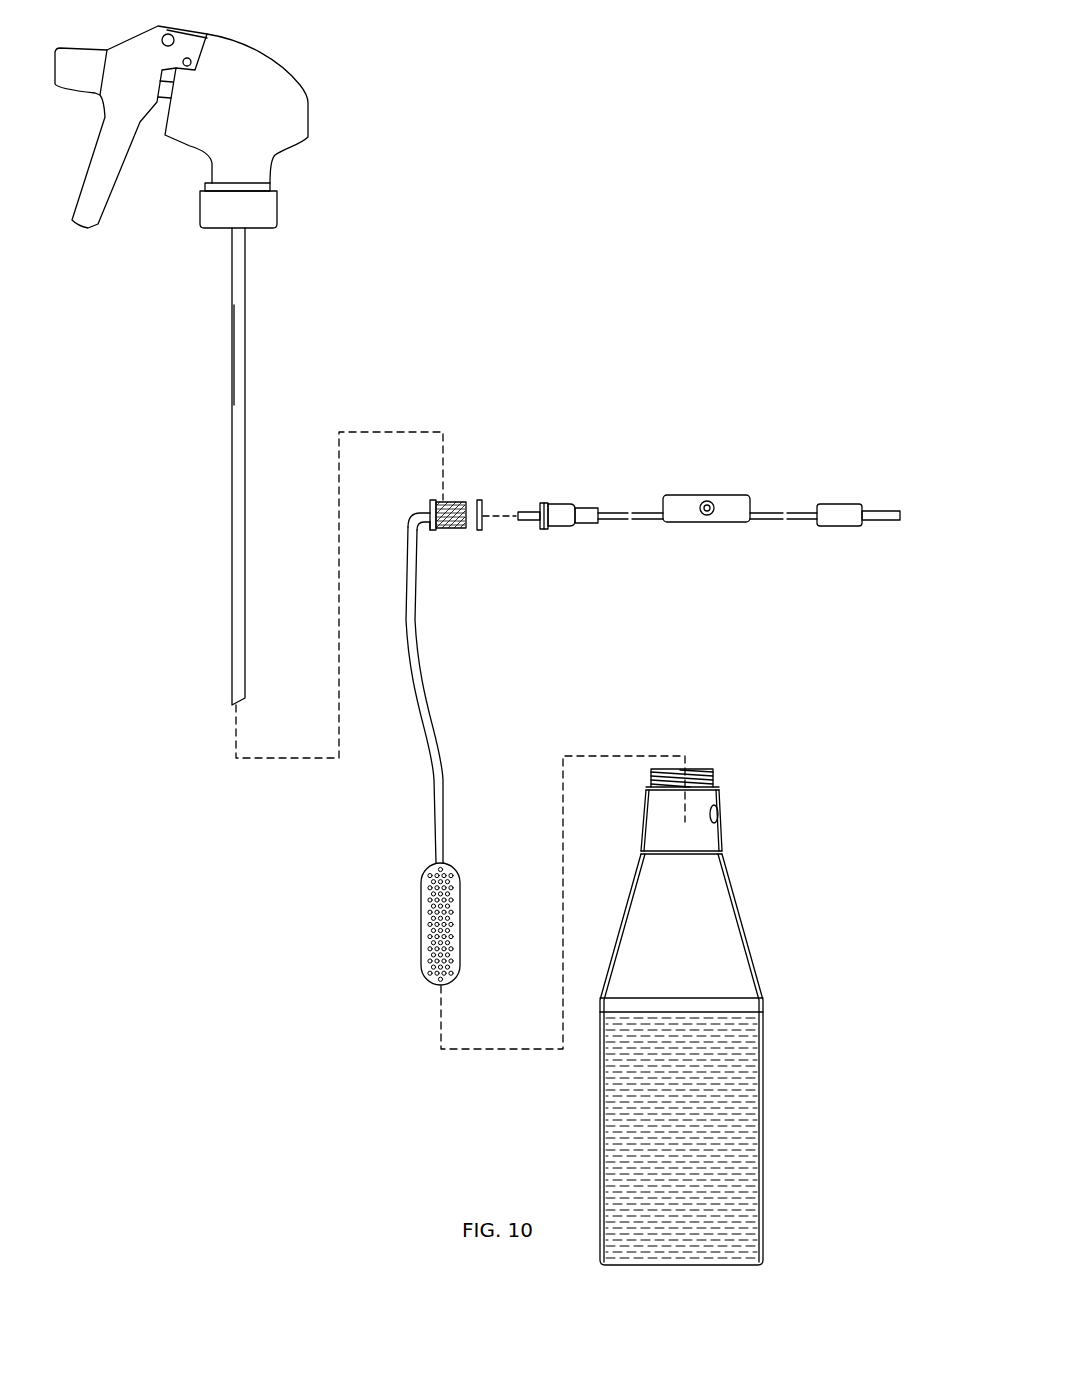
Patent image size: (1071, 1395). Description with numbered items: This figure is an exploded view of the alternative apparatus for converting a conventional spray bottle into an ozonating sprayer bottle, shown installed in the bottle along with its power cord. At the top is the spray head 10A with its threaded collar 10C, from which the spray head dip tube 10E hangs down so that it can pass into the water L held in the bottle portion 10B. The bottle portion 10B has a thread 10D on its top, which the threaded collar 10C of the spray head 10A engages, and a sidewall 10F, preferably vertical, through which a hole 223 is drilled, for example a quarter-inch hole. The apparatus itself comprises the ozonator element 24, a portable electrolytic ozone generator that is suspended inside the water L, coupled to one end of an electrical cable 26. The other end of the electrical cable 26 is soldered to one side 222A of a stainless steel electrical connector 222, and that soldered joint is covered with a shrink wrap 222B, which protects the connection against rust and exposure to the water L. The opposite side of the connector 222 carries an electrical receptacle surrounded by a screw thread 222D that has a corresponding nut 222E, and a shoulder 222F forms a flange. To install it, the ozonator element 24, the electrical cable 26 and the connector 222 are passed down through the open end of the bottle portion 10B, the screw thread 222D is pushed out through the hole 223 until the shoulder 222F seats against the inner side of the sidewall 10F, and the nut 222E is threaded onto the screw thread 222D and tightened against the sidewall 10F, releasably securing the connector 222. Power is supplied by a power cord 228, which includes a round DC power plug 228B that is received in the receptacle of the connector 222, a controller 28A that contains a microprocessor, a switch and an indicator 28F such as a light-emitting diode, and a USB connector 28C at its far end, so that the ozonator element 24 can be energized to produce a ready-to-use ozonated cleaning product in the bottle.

The spray head 10A is at (245, 57).
The threaded collar 10C is at (270, 210).
The spray head dip tube 10E is at (238, 496).
The thread 10D is at (718, 770).
The sidewall 10F is at (719, 832).
The bottle portion 10B is at (718, 1059).
The hole 223 is at (722, 815).
The water L is at (703, 1120).
The electrical connector 222 is at (469, 483).
The side of the electrical connector 222A is at (426, 496).
The shrink wrap 222B is at (407, 517).
The screw thread 222D is at (453, 513).
The nut 222E is at (480, 510).
The shoulder 222F is at (436, 528).
The power cord 228 is at (714, 537).
The round DC power plug 228B is at (559, 472).
The controller 28A is at (732, 506).
The indicator 28F is at (700, 511).
The USB connector 28C is at (864, 483).
The electrical cable 26 is at (434, 745).
The ozonator element 24 is at (405, 982).